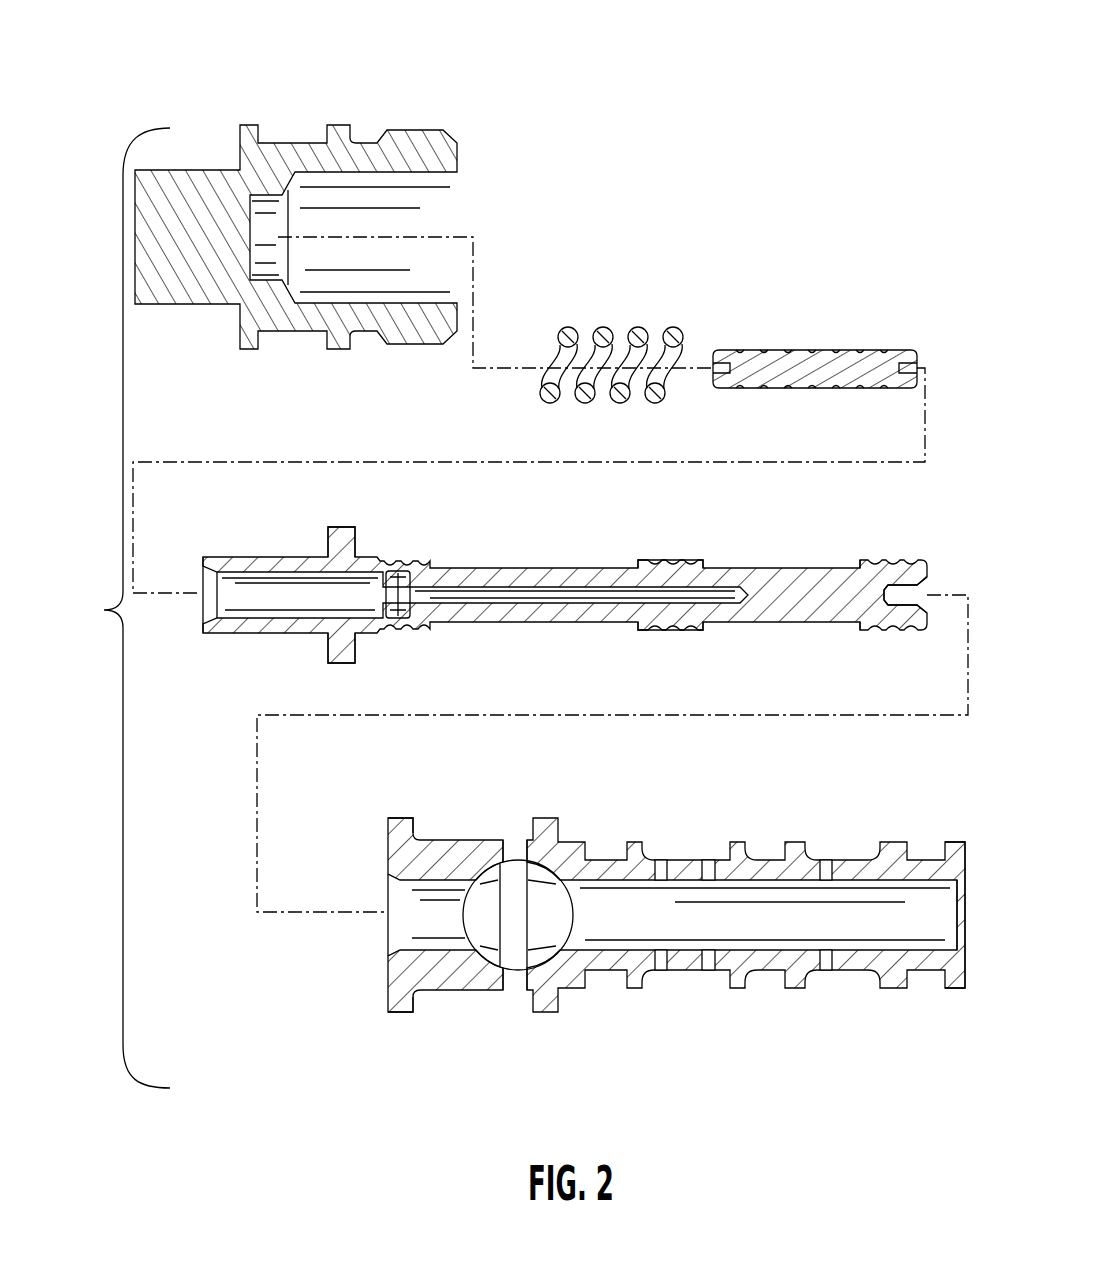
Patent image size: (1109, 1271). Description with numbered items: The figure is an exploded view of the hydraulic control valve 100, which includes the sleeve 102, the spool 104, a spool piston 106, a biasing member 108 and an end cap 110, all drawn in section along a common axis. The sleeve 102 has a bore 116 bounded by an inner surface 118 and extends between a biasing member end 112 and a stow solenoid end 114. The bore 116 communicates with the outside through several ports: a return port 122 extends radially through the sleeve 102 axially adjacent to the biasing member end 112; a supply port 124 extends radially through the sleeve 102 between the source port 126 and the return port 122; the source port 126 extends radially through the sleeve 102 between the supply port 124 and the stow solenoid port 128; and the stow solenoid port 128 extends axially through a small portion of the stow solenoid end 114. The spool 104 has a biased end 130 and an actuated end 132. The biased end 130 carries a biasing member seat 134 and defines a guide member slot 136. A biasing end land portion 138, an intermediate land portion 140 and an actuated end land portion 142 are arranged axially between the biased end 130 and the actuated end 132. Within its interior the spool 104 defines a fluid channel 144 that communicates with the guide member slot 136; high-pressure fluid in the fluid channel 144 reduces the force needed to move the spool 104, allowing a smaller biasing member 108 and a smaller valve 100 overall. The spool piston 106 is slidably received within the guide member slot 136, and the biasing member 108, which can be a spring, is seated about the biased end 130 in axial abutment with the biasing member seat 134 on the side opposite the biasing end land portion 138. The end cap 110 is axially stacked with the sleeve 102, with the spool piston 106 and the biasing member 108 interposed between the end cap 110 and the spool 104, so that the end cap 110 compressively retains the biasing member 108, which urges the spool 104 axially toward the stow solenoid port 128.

The hydraulic control valve 100 is at (119, 608).
The sleeve 102 is at (447, 1022).
The spool 104 is at (232, 669).
The spool piston 106 is at (842, 297).
The biasing member 108 is at (627, 289).
The end cap 110 is at (357, 86).
The biasing member end 112 is at (442, 813).
The stow solenoid end 114 is at (912, 795).
The bore 116 is at (784, 937).
The inner surface 118 is at (514, 912).
The return port 122 is at (517, 850).
The supply port 124 is at (705, 850).
The source port 126 is at (826, 850).
The stow solenoid port 128 is at (937, 935).
The biased end 130 is at (265, 545).
The actuated end 132 is at (876, 545).
The biasing member seat 134 is at (345, 527).
The guide member slot 136 is at (267, 600).
The biasing end land portion 138 is at (404, 638).
The intermediate land portion 140 is at (674, 640).
The actuated end land portion 142 is at (870, 637).
The fluid channel 144 is at (526, 597).